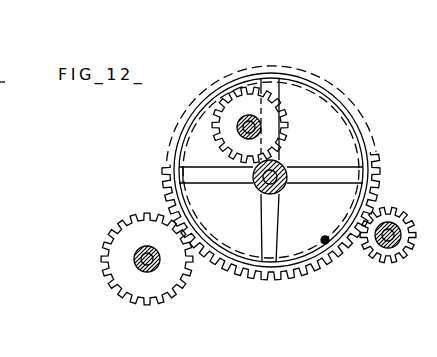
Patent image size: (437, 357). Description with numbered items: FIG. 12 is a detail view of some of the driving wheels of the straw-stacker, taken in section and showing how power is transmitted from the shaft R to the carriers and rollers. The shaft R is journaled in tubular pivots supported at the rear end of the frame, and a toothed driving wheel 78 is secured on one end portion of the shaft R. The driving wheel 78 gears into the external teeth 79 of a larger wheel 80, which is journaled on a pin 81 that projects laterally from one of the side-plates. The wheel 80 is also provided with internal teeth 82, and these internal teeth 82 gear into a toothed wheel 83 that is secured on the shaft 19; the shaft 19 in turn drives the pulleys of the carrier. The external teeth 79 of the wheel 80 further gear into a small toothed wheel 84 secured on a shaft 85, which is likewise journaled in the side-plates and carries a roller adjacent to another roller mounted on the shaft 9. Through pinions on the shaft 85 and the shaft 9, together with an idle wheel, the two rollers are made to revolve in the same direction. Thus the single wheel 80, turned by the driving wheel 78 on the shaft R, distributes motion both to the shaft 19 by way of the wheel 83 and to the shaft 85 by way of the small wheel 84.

The shaft 19 is at (250, 125).
The toothed driving wheel 78 is at (157, 277).
The external teeth 79 is at (280, 280).
The wheel 80 is at (363, 128).
The pin 81 is at (280, 172).
The internal teeth 82 is at (190, 120).
The toothed wheel 83 is at (265, 125).
The small toothed wheel 84 is at (398, 210).
The shaft 85 is at (383, 244).
The shaft 9 is at (325, 237).
The shaft R is at (143, 266).